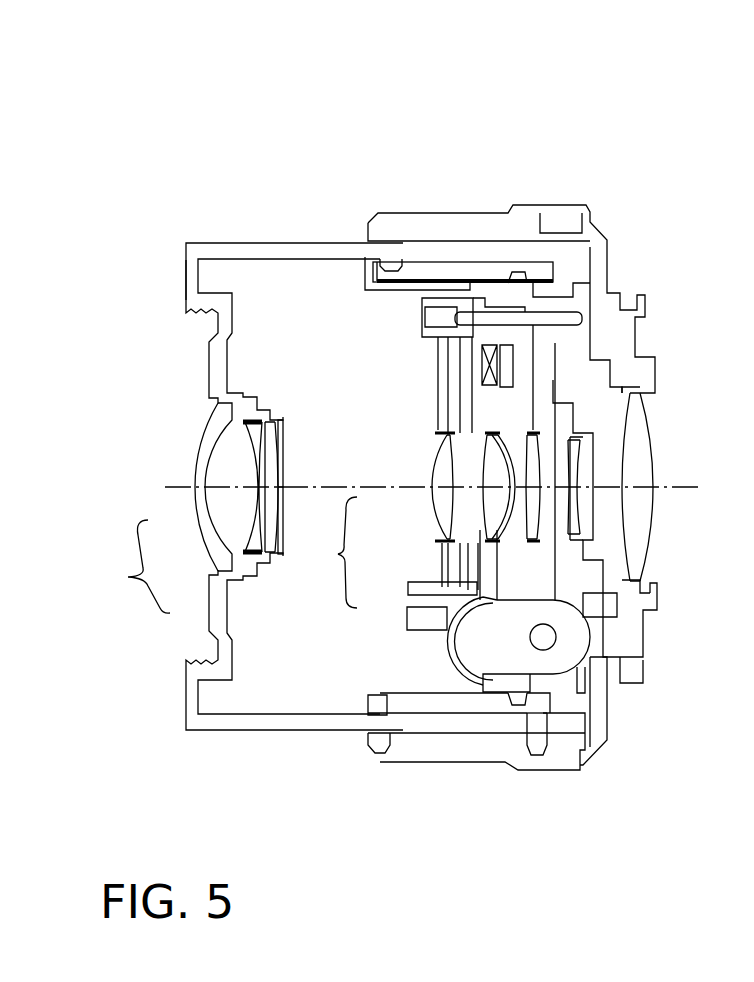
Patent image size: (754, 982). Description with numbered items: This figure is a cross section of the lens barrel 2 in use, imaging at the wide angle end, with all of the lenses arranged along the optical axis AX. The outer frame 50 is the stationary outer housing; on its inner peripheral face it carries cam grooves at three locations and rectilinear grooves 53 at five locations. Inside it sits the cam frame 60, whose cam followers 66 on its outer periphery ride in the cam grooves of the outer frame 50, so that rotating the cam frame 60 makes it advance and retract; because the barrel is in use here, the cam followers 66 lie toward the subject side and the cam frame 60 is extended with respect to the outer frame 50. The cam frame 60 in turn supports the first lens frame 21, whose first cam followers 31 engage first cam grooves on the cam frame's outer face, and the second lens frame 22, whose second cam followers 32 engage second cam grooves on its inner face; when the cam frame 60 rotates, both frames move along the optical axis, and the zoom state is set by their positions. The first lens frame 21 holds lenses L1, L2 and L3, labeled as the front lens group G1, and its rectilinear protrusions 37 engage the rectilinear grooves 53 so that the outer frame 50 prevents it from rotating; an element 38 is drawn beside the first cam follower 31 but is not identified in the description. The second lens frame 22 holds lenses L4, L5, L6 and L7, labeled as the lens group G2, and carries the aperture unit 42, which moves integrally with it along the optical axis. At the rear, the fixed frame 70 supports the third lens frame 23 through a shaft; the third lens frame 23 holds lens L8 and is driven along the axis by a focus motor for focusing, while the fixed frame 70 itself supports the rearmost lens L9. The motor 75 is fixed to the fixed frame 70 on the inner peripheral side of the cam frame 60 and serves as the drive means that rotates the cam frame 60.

The lens barrel 2 is at (195, 130).
The first lens frame 21 is at (213, 250).
The second lens frame 22 is at (587, 593).
The third lens frame 23 is at (583, 560).
The first cam followers 31 is at (392, 262).
The second cam followers 32 is at (523, 272).
The rectilinear protrusions 37 is at (370, 752).
The nut 38 is at (368, 240).
The aperture unit 42 is at (465, 415).
The outer frame 50 is at (475, 223).
The rectilinear grooves 53 is at (480, 737).
The cam frame 60 is at (448, 267).
The cam followers 66 is at (540, 752).
The fixed frame 70 is at (598, 610).
The motor 75 is at (562, 655).
The optical axis AX is at (185, 487).
The first lens group G1 is at (135, 566).
The second lens group G2 is at (333, 552).
The lens L1 is at (203, 515).
The lens L2 is at (258, 502).
The lens L3 is at (268, 513).
The lens L4 is at (443, 497).
The lens L5 is at (478, 497).
The lens L6 is at (497, 497).
The lens L7 is at (535, 492).
The lens L8 is at (572, 467).
The lens L9 is at (640, 470).